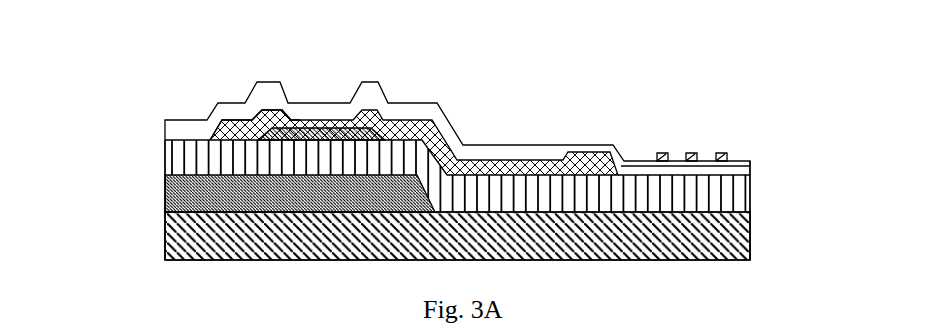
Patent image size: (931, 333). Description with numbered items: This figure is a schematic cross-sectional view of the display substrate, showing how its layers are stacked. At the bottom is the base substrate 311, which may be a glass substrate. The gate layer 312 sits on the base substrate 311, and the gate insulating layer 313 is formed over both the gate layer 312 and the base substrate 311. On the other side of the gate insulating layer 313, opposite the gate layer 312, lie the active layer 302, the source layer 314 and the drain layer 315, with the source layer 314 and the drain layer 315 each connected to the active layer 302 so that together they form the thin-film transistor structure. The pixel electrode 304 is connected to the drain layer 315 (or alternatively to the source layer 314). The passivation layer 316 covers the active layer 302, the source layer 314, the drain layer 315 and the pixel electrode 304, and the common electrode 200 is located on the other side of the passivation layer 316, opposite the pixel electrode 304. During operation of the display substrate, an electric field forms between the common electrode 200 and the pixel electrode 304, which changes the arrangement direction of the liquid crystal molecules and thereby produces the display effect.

The common electrode 200 is at (661, 152).
The active layer 302 is at (305, 125).
The pixel electrode 304 is at (750, 172).
The base substrate 311 is at (750, 233).
The gate layer 312 is at (165, 183).
The gate insulating layer 313 is at (750, 197).
The source layer 314 is at (240, 118).
The drain layer 315 is at (408, 122).
The passivation layer 316 is at (745, 160).